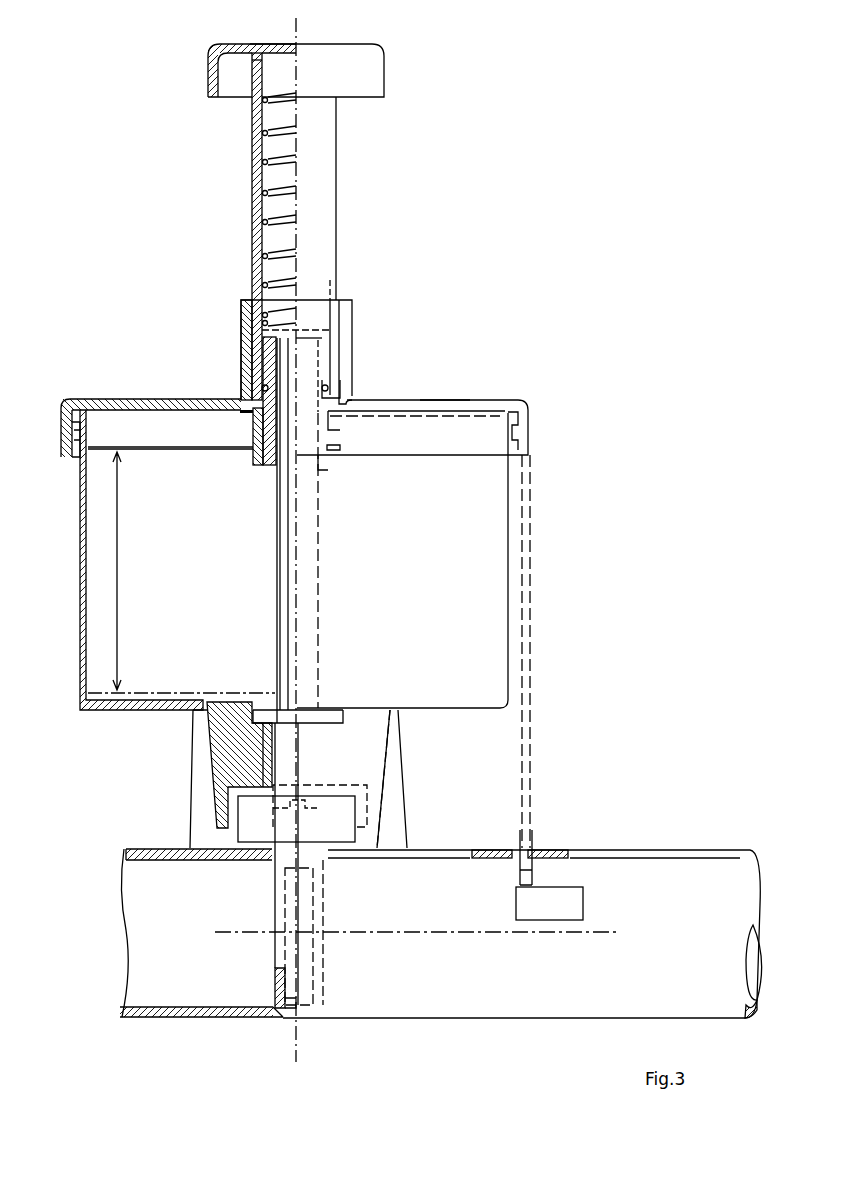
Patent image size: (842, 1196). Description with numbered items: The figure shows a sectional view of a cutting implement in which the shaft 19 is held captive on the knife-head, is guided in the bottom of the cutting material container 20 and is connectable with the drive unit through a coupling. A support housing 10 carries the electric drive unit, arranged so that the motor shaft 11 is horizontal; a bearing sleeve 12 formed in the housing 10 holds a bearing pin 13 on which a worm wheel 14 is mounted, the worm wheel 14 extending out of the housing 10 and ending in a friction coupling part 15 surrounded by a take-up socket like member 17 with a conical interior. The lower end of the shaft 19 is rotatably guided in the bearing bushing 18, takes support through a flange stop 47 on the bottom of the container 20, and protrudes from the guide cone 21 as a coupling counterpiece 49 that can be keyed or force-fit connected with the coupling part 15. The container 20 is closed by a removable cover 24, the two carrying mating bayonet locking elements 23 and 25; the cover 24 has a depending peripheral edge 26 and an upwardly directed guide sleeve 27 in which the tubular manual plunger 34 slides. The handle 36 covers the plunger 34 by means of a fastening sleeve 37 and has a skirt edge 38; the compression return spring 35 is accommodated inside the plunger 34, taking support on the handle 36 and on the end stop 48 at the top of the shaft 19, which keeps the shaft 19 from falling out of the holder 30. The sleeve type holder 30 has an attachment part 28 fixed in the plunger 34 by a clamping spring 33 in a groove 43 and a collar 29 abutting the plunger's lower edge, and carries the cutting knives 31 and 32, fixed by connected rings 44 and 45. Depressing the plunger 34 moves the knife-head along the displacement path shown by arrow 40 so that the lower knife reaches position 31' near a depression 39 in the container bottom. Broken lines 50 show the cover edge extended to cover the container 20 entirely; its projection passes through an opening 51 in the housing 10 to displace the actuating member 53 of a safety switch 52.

The support housing 10 is at (180, 1017).
The motor shaft 11 is at (503, 930).
The bearing sleeve 12 is at (278, 985).
The bearing pin 13 is at (290, 1012).
The worm wheel 14 is at (275, 905).
The friction coupling part 15 is at (248, 817).
The take-up socket like member 17 is at (266, 760).
The bearing bushing 18 is at (225, 774).
The shaft 19 is at (276, 585).
The cutting material container 20 is at (510, 552).
The guide cone 21 is at (222, 733).
The bayonet locking element 23 is at (70, 400).
The cover 24 is at (136, 398).
The bayonet locking element 25 is at (70, 438).
The peripheral edge 26 is at (73, 457).
The guide sleeve 27 is at (352, 312).
The attachment part 28 is at (263, 355).
The collar 29 is at (345, 400).
The sleeve type holder 30 is at (253, 431).
The cutting knife 31 is at (170, 472).
The cutting knife position 31' is at (181, 667).
The cutting knife 32 is at (452, 410).
The clamping spring 33 is at (262, 388).
The tubular manual plunger 34 is at (336, 226).
The compression return spring 35 is at (252, 194).
The handle 36 is at (276, 44).
The fastening sleeve 37 is at (260, 72).
The skirt edge 38 is at (384, 78).
The depression 39 is at (277, 702).
The arrow 40 is at (120, 577).
The groove 43 is at (333, 385).
The ring 44 is at (340, 427).
The ring 45 is at (343, 455).
The flange stop 47 is at (262, 702).
The end stop 48 is at (262, 332).
The coupling counterpiece 49 is at (317, 808).
The extended cover edge 50 is at (532, 635).
The opening 51 is at (528, 849).
The safety switch 52 is at (583, 905).
The actuating member 53 is at (537, 876).